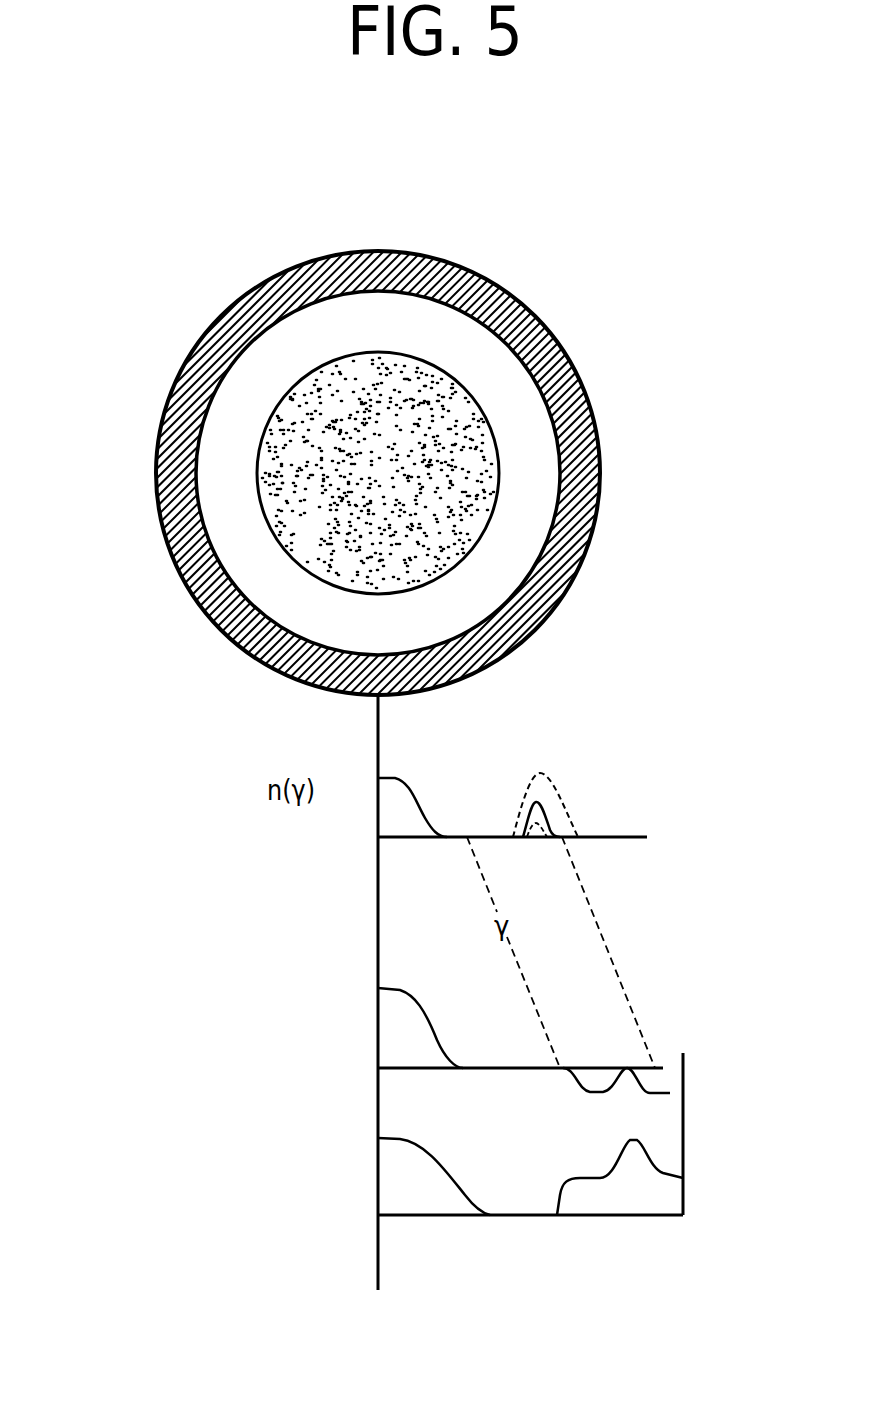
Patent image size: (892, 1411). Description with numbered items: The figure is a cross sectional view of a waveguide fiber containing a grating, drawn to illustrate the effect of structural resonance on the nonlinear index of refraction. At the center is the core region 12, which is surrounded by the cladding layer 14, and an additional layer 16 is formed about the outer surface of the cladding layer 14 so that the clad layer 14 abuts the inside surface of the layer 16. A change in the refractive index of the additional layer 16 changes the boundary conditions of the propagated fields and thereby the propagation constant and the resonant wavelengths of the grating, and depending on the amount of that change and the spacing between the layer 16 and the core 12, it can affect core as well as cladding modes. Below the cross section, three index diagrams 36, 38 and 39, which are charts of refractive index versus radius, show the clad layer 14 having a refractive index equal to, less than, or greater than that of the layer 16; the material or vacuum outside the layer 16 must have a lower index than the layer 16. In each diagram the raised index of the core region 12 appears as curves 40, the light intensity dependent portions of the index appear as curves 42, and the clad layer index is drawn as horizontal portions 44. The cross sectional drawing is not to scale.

The core region 12 is at (297, 440).
The cladding layer 14 is at (450, 337).
The additional layer 16 is at (585, 455).
The index diagram 36 is at (654, 907).
The index diagram 38 is at (754, 1147).
The index diagram 39 is at (721, 1269).
The curves 40 is at (397, 778).
The curves 42 is at (545, 800).
The horizontal portions 44 is at (460, 823).